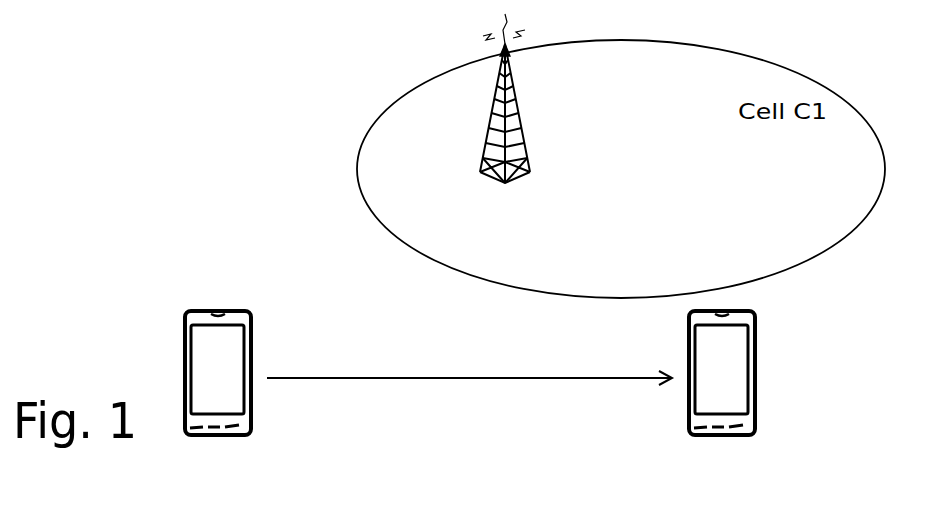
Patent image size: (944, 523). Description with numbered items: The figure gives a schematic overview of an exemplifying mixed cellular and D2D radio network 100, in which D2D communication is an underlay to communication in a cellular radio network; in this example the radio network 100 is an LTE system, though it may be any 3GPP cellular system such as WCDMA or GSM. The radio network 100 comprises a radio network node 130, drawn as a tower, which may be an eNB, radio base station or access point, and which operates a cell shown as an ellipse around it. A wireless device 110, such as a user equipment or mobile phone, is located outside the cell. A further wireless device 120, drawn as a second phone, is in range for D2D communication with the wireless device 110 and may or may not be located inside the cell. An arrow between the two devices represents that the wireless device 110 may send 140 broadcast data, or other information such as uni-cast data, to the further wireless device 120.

The mixed cellular and D2D radio network 100 is at (170, 108).
The wireless device 110 is at (218, 373).
The further wireless device 120 is at (722, 373).
The radio network node 130 is at (476, 98).
The sending of broadcast data 140 is at (469, 363).